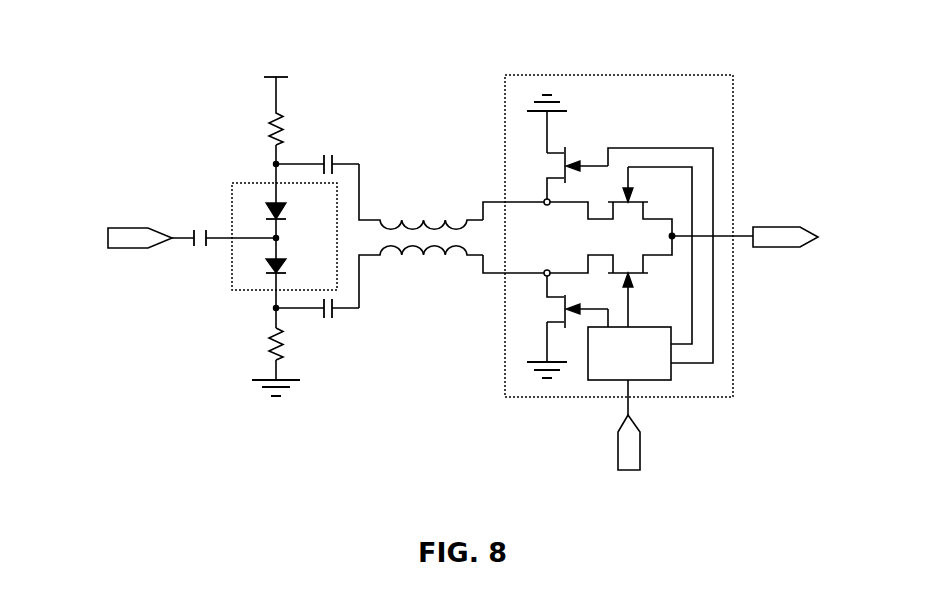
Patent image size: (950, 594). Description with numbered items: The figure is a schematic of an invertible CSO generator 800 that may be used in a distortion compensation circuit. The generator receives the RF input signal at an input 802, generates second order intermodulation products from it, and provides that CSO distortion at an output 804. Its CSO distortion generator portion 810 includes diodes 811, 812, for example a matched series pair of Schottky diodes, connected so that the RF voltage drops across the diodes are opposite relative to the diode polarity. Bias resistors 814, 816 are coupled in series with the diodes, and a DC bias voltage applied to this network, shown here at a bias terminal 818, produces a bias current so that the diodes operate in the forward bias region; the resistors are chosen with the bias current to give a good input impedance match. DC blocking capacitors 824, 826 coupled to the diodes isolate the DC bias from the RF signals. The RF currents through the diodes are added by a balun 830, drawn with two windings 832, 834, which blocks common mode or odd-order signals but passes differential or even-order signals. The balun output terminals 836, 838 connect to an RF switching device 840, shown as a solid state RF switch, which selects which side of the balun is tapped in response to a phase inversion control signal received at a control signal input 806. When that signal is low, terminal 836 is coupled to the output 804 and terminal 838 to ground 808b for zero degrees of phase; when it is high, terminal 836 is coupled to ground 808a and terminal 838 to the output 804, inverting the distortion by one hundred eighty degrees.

The invertible CSO generator 800 is at (157, 54).
The input 802 is at (128, 248).
The output 804 is at (787, 247).
The control signal input 806 is at (640, 448).
The ground 808a is at (545, 131).
The ground 808b is at (545, 345).
The CSO distortion generator portion 810 is at (218, 228).
The diode 811 is at (265, 210).
The diode 812 is at (267, 263).
The bias resistor 814 is at (281, 116).
The bias resistor 816 is at (280, 354).
The bias terminal 818 is at (288, 79).
The DC blocking capacitor 824 is at (335, 160).
The DC blocking capacitor 826 is at (337, 318).
The balun 830 is at (421, 251).
The first winding of transformer 832 is at (360, 192).
The second winding of transformer 834 is at (428, 270).
The output terminal 836 is at (480, 203).
The output terminal 838 is at (482, 264).
The switching device 840 is at (593, 271).